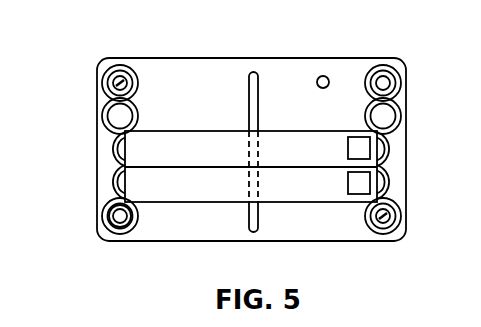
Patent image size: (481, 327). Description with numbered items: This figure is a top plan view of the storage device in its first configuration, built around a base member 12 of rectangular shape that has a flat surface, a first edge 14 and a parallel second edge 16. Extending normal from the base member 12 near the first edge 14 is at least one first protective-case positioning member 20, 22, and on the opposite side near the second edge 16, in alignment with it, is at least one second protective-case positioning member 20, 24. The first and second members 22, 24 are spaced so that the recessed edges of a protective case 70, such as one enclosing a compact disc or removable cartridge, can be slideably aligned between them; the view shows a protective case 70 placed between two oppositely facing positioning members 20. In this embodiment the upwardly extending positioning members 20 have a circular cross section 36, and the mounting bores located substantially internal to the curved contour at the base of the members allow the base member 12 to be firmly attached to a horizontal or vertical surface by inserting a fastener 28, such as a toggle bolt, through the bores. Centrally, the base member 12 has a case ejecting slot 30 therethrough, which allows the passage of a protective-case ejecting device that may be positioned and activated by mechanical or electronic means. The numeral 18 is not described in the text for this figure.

The base member 12 is at (176, 58).
The first edge 14 is at (97, 155).
The second edge 16 is at (407, 149).
The holes 18 is at (321, 76).
The protective-case positioning member 20 is at (248, 151).
The first protective-case positioning member 22 is at (116, 240).
The second protective-case positioning member 24 is at (248, 151).
The fastener 28 is at (109, 74).
The case ejecting slot 30 is at (251, 126).
The circular cross section 36 is at (248, 151).
The protective case 70 is at (191, 147).